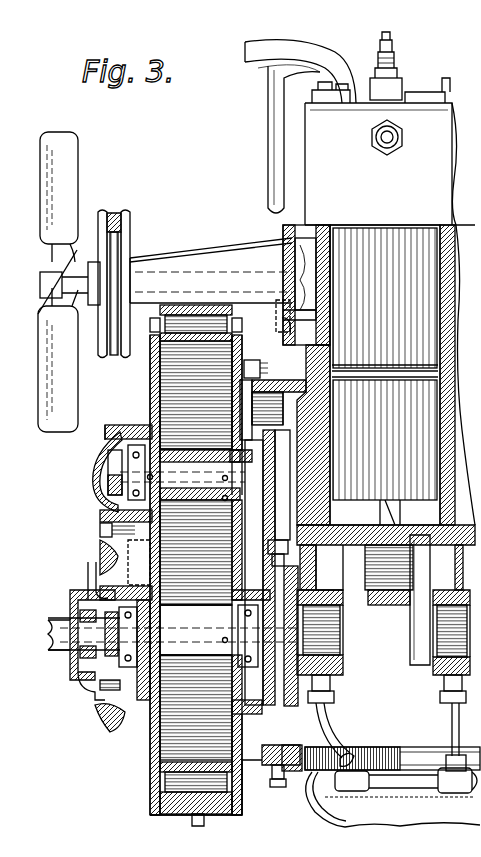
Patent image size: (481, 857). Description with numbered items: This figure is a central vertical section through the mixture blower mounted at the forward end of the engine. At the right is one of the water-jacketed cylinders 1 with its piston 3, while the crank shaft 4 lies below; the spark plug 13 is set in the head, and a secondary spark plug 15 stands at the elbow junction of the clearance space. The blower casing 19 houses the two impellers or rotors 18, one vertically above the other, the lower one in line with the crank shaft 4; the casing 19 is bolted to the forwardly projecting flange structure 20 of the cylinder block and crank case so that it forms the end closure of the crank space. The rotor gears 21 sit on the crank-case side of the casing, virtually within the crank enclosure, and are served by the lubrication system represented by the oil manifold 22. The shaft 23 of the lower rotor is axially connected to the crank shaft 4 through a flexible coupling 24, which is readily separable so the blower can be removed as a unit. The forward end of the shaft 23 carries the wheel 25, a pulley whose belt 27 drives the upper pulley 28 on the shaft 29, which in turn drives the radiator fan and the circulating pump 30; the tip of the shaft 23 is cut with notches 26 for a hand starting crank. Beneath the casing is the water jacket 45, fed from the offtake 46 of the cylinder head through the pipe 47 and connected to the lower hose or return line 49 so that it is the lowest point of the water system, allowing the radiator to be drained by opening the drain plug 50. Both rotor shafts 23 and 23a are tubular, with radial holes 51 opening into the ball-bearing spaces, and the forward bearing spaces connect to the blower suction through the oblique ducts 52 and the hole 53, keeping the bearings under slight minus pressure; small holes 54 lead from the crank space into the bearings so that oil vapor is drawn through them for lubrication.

The cylinder 1 is at (450, 287).
The piston 3 is at (420, 320).
The crank shaft 4 is at (330, 652).
The spark plug 13 is at (400, 138).
The secondary spark plug 15 is at (400, 60).
The impellers or rotors 18 is at (165, 418).
The blower casing 19 is at (160, 375).
The flange structure 20 is at (283, 400).
The rotor gears 21 is at (283, 425).
The oil manifold 22 is at (398, 775).
The shaft 23 is at (80, 630).
The rotor shaft 23a is at (180, 470).
The flexible coupling 24 is at (300, 585).
The wheel 25 is at (95, 718).
The notches 26 is at (50, 652).
The belt 27 is at (114, 213).
The upper pulley 28 is at (128, 225).
The shaft 29 is at (190, 268).
The circulating pump 30 is at (300, 225).
The water jacket 45 is at (160, 780).
The offtake 46 is at (280, 56).
The pipe 47 is at (272, 155).
The lower hose or return line 49 is at (282, 338).
The drain plug 50 is at (200, 815).
The radial holes 51 is at (232, 468).
The oblique ducts 52 is at (98, 552).
The hole 53 is at (158, 556).
The small holes 54 is at (283, 440).